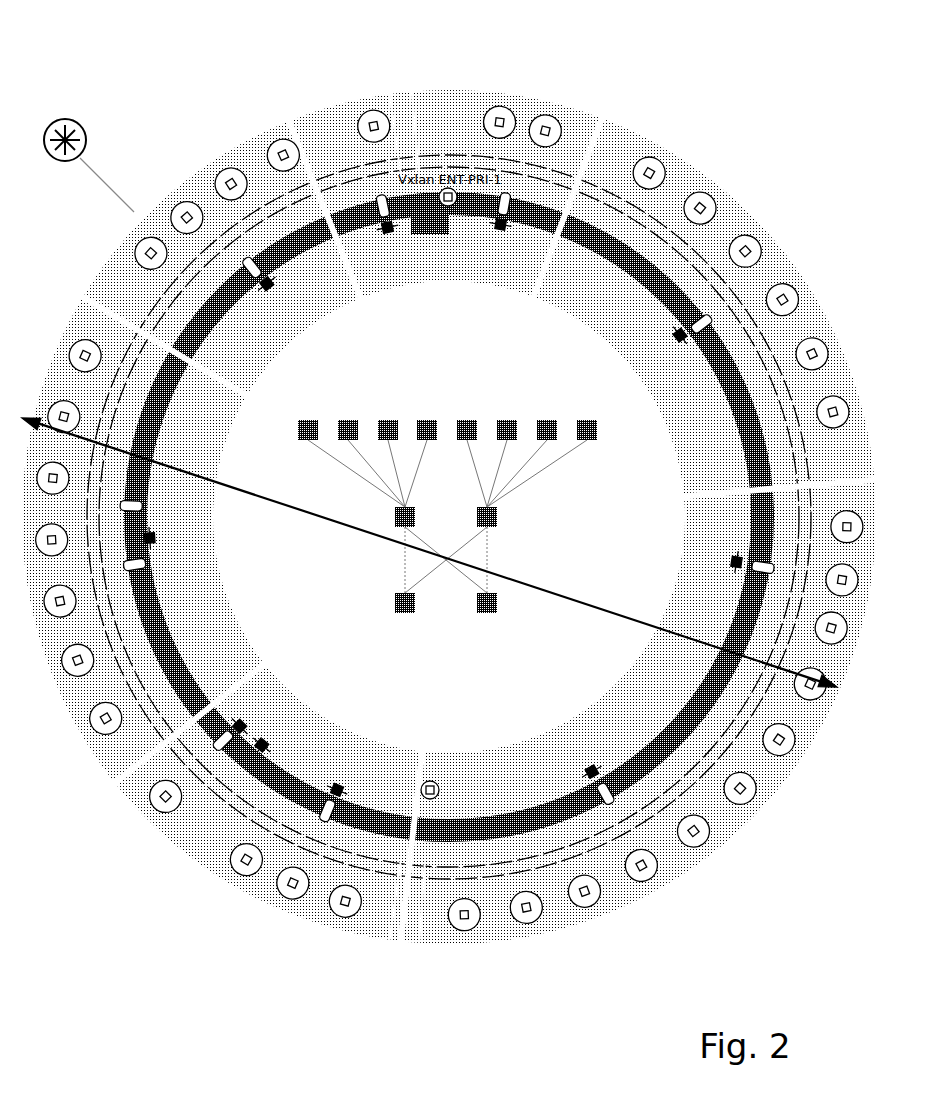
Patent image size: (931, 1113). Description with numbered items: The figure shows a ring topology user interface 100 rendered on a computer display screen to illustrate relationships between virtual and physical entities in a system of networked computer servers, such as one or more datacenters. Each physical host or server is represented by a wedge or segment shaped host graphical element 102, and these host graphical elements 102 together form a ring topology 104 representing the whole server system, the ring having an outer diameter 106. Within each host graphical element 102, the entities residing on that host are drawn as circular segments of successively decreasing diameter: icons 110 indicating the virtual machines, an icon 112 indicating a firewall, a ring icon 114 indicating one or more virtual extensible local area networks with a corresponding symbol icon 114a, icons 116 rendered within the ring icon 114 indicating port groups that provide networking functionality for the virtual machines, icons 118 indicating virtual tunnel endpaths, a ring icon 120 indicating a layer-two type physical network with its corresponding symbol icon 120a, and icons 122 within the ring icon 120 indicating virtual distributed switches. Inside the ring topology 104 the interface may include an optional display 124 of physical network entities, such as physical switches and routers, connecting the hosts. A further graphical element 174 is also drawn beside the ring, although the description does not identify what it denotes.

The ring topology user interface 100 is at (766, 927).
The host graphical element 102 is at (483, 47).
The ring topology 104 is at (106, 829).
The outer diameter 106 is at (545, 598).
The virtual machine icons 110 is at (229, 168).
The firewall icon 112 is at (315, 168).
The VXLAN ring icon 114 is at (612, 262).
The VXLAN symbol icon 114a is at (451, 208).
The port group icons 116 is at (705, 330).
The virtual tunnel endpath icons 118 is at (155, 534).
The L2-type physical network ring icon 120 is at (350, 258).
The physical network symbol icon 120a is at (430, 781).
The virtual distributed switch icons 122 is at (278, 312).
The display of physical network entities 124 is at (545, 526).
The navigation control icon 174 is at (68, 126).